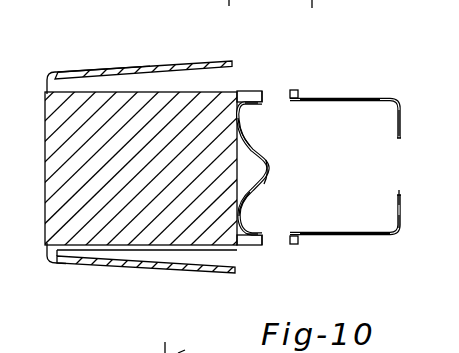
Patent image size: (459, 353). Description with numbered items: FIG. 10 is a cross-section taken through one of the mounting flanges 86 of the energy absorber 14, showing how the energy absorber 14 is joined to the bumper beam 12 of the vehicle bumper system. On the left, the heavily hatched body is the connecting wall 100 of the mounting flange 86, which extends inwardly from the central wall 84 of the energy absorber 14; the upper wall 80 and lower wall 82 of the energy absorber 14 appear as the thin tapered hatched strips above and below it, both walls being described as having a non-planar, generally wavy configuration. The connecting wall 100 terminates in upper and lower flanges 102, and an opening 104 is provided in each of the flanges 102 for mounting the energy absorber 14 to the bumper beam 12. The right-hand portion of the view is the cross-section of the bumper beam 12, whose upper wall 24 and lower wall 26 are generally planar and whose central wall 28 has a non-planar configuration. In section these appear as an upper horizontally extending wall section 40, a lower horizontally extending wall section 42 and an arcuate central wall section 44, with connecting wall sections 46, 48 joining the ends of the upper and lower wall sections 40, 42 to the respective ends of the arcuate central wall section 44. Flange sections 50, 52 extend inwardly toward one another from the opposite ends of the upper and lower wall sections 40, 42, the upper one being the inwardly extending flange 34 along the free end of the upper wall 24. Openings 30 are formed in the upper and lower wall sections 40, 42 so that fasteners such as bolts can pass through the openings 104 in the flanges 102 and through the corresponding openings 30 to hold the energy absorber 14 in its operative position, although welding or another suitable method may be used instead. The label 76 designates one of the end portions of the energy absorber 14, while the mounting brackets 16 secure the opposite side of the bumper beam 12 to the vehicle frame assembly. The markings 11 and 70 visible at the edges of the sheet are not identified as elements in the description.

The frame assembly 11 is at (221, 18).
The bumper beam 12 is at (388, 88).
The energy absorber 14 is at (91, 62).
The mounting bracket 16 is at (165, 338).
The upper wall 24 is at (340, 87).
The lower wall 26 is at (372, 246).
The central wall 28 is at (281, 157).
The opening 30 is at (250, 104).
The inwardly extending flange 34 is at (401, 142).
The upper horizontally extending wall section 40 is at (360, 99).
The lower horizontally extending wall section 42 is at (337, 238).
The arcuate central wall section 44 is at (268, 174).
The connecting wall section 46 is at (242, 124).
The connecting wall section 48 is at (242, 208).
The flange section 50 is at (401, 137).
The flange section 52 is at (400, 196).
The hinge 70 is at (185, 350).
The end portion 76 is at (311, 14).
The upper wall 80 is at (155, 55).
The lower wall 82 is at (79, 278).
The central wall 84 is at (34, 88).
The mounting flange 86 is at (177, 232).
The connecting wall 100 is at (67, 200).
The flange 102 is at (253, 91).
The opening 104 is at (263, 100).